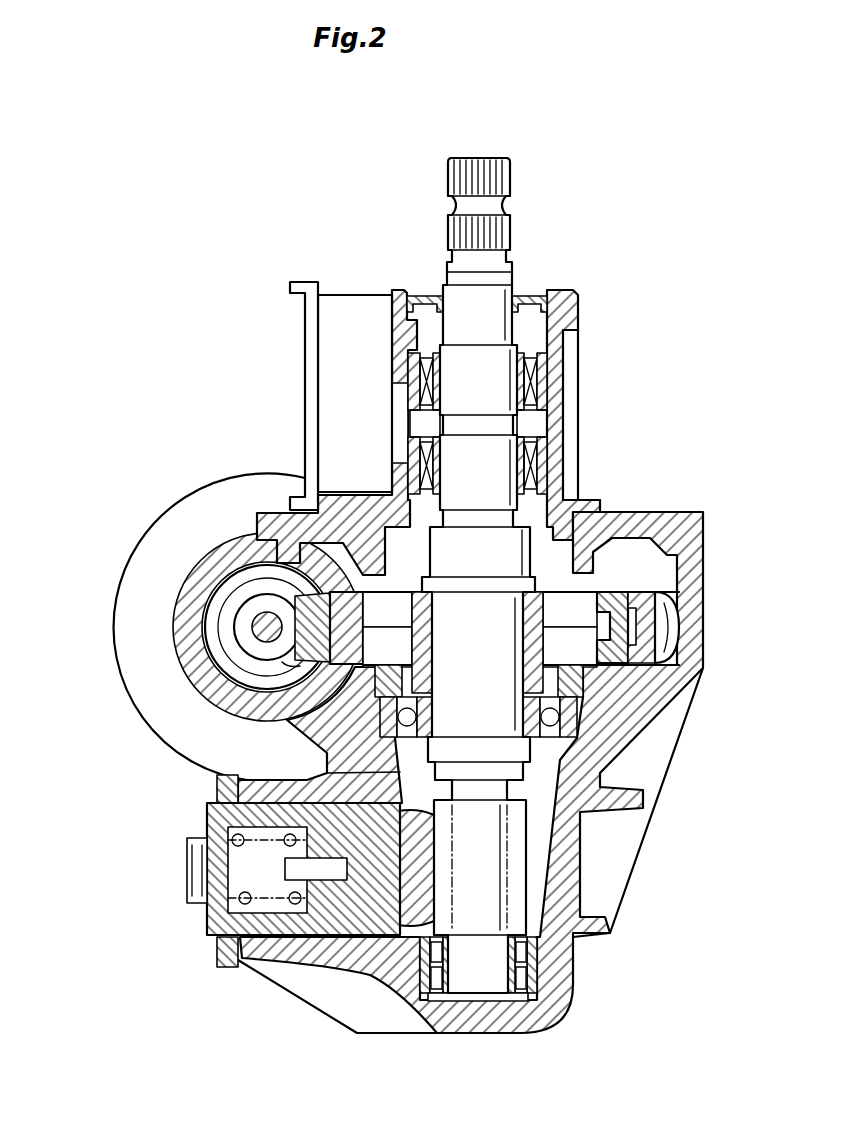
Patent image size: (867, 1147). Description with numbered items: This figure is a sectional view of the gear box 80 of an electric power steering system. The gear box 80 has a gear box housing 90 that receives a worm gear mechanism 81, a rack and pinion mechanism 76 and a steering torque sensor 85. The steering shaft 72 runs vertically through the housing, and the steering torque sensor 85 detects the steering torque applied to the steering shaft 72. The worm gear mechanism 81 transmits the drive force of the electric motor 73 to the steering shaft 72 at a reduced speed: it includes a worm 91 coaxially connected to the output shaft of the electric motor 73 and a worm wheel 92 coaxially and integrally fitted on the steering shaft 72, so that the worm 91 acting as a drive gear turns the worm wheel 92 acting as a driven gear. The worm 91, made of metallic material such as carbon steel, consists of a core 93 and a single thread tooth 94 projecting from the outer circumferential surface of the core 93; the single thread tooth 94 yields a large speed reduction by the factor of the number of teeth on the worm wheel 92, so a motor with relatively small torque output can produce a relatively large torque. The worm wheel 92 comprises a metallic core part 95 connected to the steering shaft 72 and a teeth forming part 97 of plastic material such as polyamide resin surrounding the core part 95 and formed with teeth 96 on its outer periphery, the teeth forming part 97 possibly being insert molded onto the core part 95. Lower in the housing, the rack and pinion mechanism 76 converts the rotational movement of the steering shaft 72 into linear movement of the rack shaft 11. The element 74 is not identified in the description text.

The rack shaft 11 is at (410, 928).
The steering shaft 72 is at (448, 180).
The electric motor 73 is at (112, 628).
The shaft lower section 74 is at (527, 880).
The rack and pinion mechanism 76 is at (534, 850).
The gear box 80 is at (597, 318).
The worm gear mechanism 81 is at (237, 600).
The steering torque sensor 85 is at (553, 378).
The gear box housing 90 is at (703, 588).
The worm 91 is at (230, 627).
The worm wheel 92 is at (613, 588).
The core 93 is at (263, 617).
The single thread tooth 94 is at (243, 652).
The core part 95 is at (397, 590).
The teeth 96 is at (282, 668).
The teeth forming part 97 is at (317, 593).